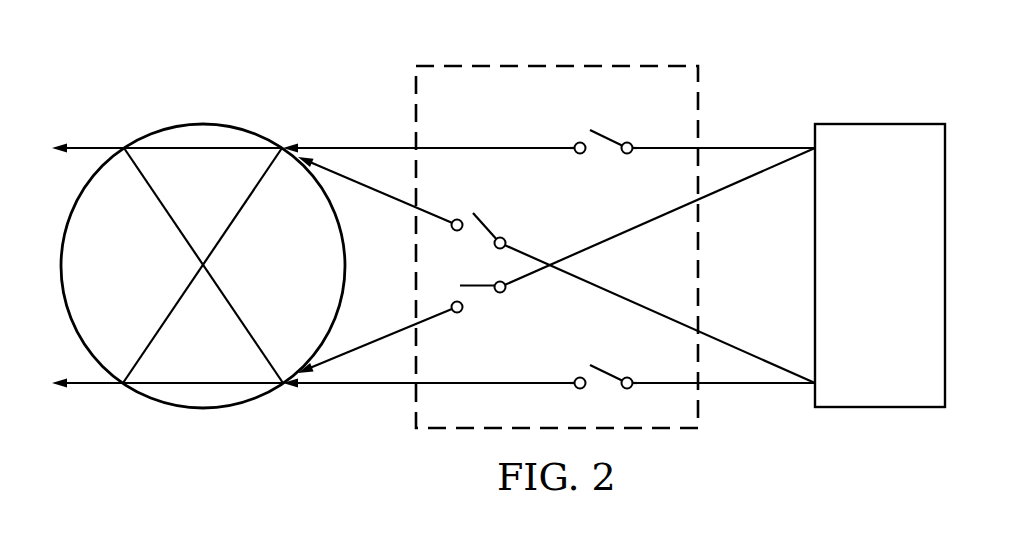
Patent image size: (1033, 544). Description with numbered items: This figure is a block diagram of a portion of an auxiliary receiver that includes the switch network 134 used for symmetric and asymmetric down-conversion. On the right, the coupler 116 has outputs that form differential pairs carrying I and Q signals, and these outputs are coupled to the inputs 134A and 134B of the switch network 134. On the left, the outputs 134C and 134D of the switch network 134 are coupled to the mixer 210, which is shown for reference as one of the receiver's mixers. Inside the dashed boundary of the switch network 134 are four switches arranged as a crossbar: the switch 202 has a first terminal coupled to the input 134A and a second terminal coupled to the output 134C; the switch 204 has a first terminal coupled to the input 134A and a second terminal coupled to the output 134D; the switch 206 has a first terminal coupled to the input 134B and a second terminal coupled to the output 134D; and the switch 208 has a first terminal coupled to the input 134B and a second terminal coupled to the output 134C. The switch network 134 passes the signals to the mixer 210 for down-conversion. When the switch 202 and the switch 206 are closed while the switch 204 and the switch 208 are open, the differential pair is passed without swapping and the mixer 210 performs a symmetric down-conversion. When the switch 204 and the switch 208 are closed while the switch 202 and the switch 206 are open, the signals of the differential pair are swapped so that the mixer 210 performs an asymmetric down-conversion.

The mixer 210 is at (202, 123).
The switch network 134 is at (614, 58).
The input 134A is at (702, 141).
The input 134B is at (702, 390).
The output 134C is at (411, 145).
The output 134D is at (411, 387).
The switch 202 is at (611, 133).
The switch 204 is at (473, 289).
The switch 206 is at (611, 368).
The switch 208 is at (486, 223).
The coupler 116 is at (861, 289).